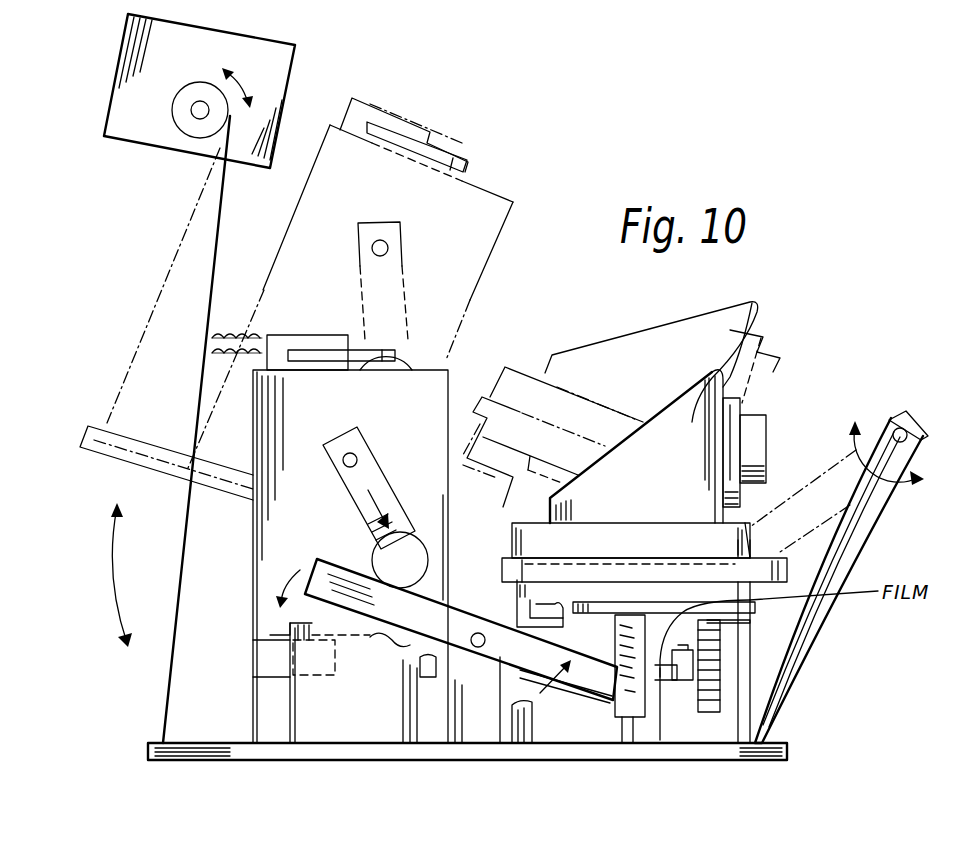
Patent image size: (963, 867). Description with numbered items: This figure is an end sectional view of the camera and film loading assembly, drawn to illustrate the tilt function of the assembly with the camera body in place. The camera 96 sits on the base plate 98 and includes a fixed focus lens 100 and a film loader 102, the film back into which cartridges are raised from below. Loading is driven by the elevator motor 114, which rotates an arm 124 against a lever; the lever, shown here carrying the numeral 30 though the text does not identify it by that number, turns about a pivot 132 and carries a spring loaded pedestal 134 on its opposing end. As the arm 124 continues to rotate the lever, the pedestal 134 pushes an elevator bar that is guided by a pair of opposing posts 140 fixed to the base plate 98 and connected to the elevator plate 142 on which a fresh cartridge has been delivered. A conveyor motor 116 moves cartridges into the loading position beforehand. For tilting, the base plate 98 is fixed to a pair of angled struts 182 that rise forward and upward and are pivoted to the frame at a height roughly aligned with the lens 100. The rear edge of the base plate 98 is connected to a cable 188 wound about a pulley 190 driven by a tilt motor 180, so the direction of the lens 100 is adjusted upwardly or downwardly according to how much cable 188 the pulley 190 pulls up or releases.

The lever 30 is at (587, 685).
The camera 96 is at (723, 320).
The base plate 98 is at (437, 751).
The fixed focus lens 100 is at (758, 433).
The film loader 102 is at (757, 523).
The elevator motor 114 is at (272, 486).
The conveyor motor 116 is at (300, 720).
The arm 124 is at (350, 478).
The pivot 132 is at (473, 647).
The spring loaded pedestal 134 is at (653, 623).
The posts 140 is at (622, 730).
The elevator plate 142 is at (707, 620).
The tilt motor 180 is at (113, 93).
The angled struts 182 is at (797, 649).
The cable 188 is at (213, 200).
The pulley 190 is at (177, 127).